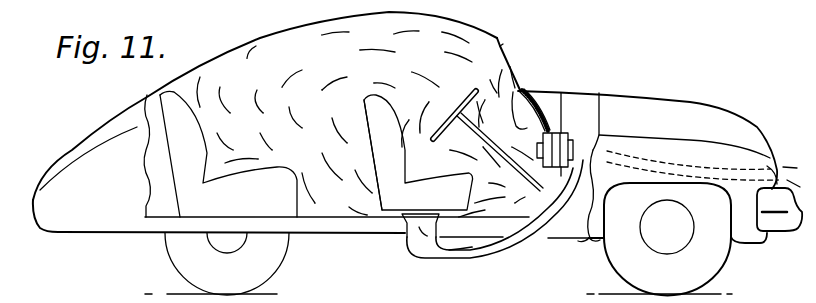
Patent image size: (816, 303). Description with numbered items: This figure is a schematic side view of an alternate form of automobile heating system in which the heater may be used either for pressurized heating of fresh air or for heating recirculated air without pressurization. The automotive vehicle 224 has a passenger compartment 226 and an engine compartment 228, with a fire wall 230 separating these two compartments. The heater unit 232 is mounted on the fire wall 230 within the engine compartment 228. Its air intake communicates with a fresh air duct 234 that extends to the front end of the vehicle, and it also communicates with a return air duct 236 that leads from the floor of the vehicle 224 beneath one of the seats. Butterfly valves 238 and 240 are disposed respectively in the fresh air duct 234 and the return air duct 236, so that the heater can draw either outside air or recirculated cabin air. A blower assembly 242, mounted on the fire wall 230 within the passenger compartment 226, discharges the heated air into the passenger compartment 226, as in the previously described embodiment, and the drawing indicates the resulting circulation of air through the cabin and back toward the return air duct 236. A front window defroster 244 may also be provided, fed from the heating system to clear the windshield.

The automotive vehicle 224 is at (505, 48).
The passenger compartment 226 is at (292, 43).
The engine compartment 228 is at (585, 100).
The fire wall 230 is at (563, 96).
The heater unit 232 is at (567, 136).
The fresh air duct 234 is at (684, 163).
The return air duct 236 is at (522, 240).
The butterfly valve 238 is at (611, 150).
The butterfly valve 240 is at (578, 163).
The blower assembly 242 is at (542, 137).
The front window defroster 244 is at (526, 92).